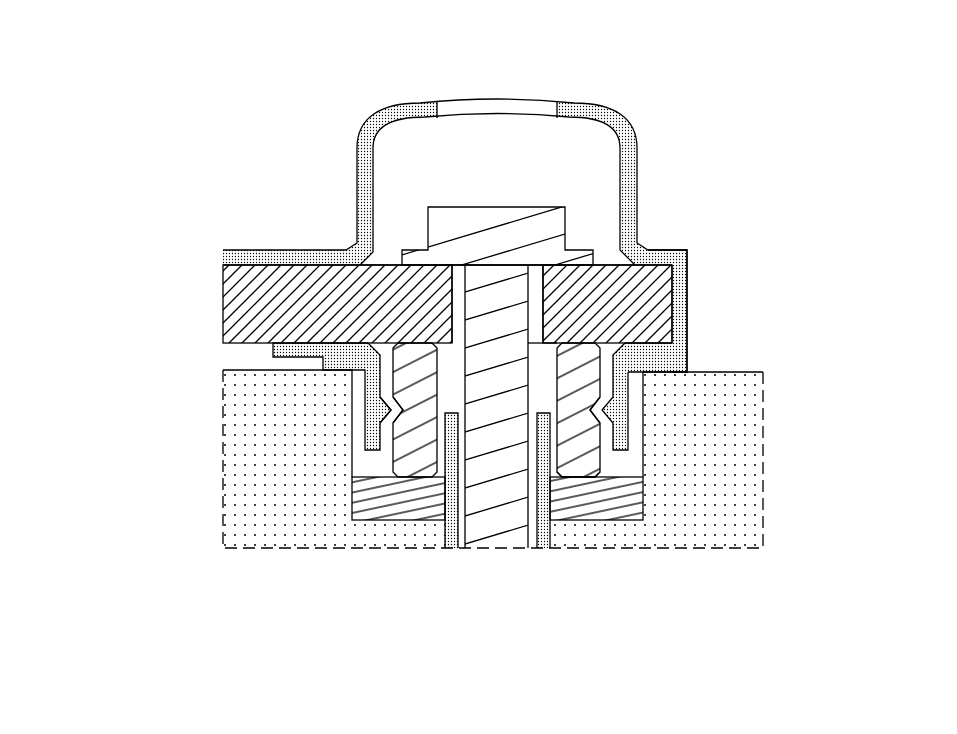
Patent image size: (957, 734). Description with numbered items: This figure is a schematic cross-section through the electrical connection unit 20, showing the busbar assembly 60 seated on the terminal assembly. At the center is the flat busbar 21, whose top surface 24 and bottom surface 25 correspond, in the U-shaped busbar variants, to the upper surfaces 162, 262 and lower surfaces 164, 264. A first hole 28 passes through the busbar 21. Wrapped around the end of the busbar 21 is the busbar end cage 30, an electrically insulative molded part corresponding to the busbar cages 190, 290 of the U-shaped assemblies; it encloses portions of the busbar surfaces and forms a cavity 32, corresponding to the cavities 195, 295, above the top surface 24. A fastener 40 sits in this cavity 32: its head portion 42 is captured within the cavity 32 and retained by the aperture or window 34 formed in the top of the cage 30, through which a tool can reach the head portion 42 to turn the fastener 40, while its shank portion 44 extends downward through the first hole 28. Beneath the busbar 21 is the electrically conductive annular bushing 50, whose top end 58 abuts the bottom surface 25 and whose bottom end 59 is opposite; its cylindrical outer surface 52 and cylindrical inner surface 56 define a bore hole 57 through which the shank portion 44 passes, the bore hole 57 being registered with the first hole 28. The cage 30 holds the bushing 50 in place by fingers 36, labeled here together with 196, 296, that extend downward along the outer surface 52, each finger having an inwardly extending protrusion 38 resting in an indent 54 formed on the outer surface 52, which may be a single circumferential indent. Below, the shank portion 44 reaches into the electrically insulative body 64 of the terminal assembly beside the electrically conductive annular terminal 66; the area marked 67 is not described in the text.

The electrical connection unit 20 is at (463, 354).
The busbar assembly 60 is at (298, 98).
The busbar 21 is at (235, 302).
The top surface 24 is at (752, 283).
The upper surface 162 is at (752, 283).
The upper surface 262 is at (647, 251).
The bottom surface 25 is at (198, 386).
The lower surface 164 is at (198, 386).
The lower surface 264 is at (266, 345).
The first hole 28 is at (540, 266).
The busbar end cage 30 is at (519, 241).
The busbar cage 190 is at (519, 241).
The busbar cage 290 is at (600, 108).
The cavity 32 is at (499, 162).
The cavities 195 is at (499, 162).
The cavities 295 is at (568, 178).
The aperture 34 is at (500, 104).
The fingers 36 is at (762, 384).
The seal leg 196 is at (762, 384).
The seal leg 296 is at (623, 402).
The inwardly extending protrusion 38 is at (602, 413).
The fastener 40 is at (370, 369).
The head portion 42 is at (443, 226).
The shank portion 44 is at (477, 305).
The annular bushing 50 is at (418, 455).
The cylindrical outer surface 52 is at (393, 462).
The indents 54 is at (382, 412).
The cylindrical inner surface 56 is at (557, 427).
The bore hole 57 is at (548, 362).
The top end 58 is at (583, 343).
The bottom end 59 is at (585, 462).
The body 64 is at (725, 470).
The annular terminal 66 is at (630, 508).
The channel 67 is at (604, 475).